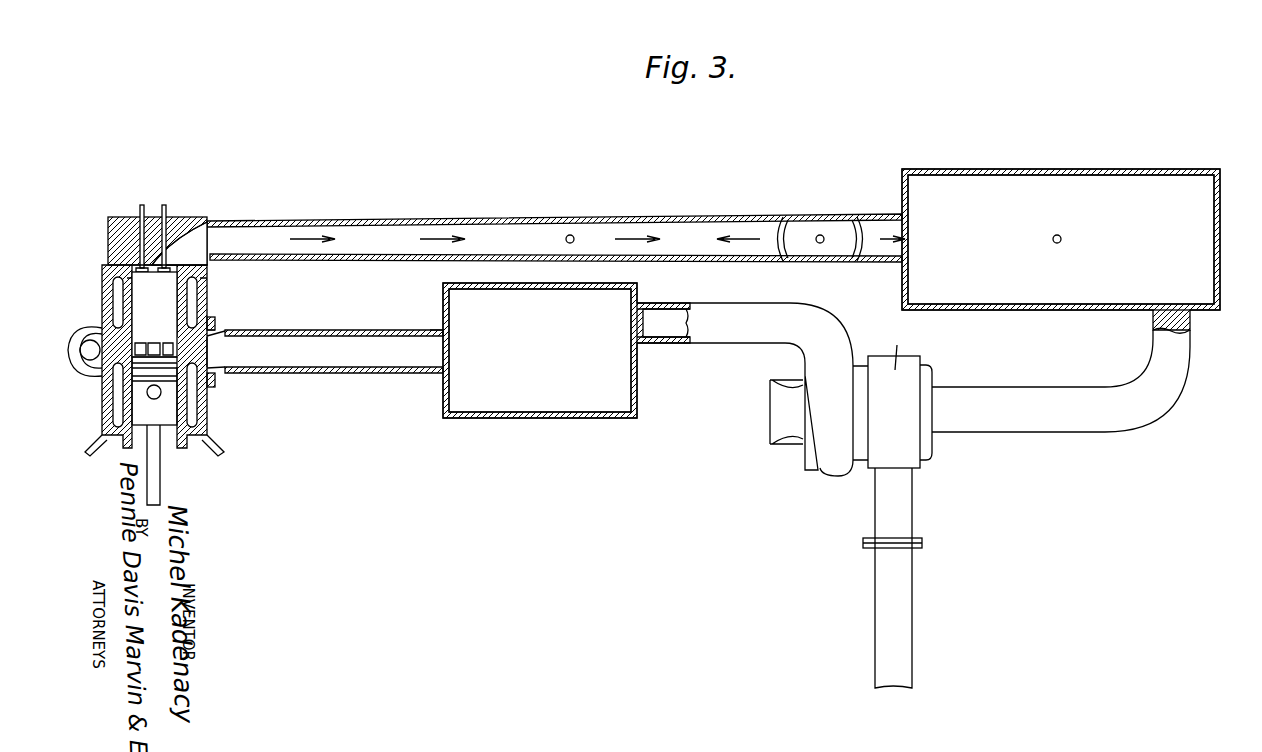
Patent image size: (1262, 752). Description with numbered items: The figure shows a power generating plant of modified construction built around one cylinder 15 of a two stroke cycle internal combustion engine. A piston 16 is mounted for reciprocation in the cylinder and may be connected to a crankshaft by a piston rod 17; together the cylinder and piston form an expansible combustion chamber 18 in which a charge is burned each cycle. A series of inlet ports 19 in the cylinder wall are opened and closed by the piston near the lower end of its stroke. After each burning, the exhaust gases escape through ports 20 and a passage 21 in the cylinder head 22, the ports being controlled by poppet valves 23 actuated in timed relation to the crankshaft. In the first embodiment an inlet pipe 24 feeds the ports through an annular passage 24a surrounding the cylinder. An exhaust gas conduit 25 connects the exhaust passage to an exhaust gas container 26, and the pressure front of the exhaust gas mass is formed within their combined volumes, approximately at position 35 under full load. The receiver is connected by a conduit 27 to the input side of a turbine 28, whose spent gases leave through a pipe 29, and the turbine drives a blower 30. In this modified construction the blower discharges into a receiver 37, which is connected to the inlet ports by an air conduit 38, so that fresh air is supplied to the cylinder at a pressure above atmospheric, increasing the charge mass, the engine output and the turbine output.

The cylinder 15 is at (205, 306).
The piston 16 is at (160, 410).
The piston rod 17 is at (155, 484).
The combustion chamber 18 is at (142, 300).
The inlet ports 19 is at (210, 331).
The ports 20 is at (138, 224).
The passage 21 is at (200, 240).
The cylinder head 22 is at (110, 246).
The poppet valves 23 is at (127, 279).
The inlet pipe 24 is at (304, 366).
The annular passage 24a is at (93, 352).
The exhaust gas conduit 25 is at (478, 219).
The exhaust gas container 26 is at (950, 168).
The conduit 27 is at (1048, 386).
The turbine 28 is at (918, 372).
The pipe 29 is at (903, 490).
The blower 30 is at (833, 437).
The position 35 is at (787, 240).
The receiver 37 is at (530, 412).
The air conduit 38 is at (432, 333).